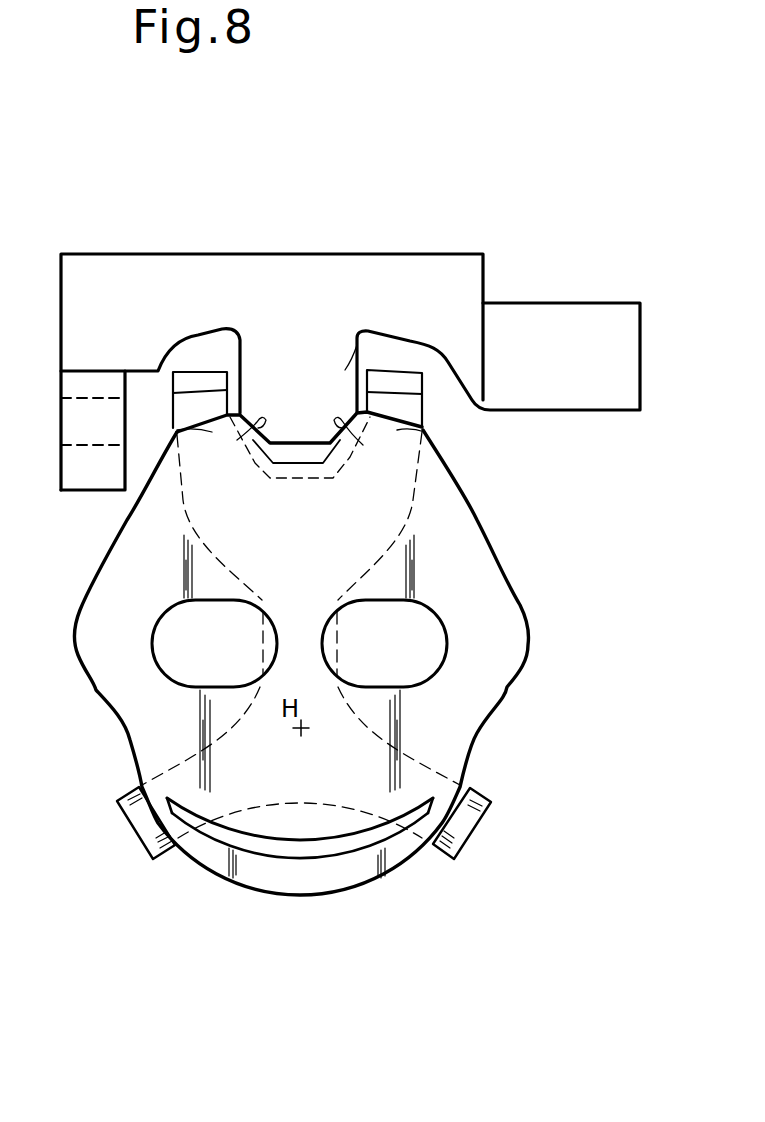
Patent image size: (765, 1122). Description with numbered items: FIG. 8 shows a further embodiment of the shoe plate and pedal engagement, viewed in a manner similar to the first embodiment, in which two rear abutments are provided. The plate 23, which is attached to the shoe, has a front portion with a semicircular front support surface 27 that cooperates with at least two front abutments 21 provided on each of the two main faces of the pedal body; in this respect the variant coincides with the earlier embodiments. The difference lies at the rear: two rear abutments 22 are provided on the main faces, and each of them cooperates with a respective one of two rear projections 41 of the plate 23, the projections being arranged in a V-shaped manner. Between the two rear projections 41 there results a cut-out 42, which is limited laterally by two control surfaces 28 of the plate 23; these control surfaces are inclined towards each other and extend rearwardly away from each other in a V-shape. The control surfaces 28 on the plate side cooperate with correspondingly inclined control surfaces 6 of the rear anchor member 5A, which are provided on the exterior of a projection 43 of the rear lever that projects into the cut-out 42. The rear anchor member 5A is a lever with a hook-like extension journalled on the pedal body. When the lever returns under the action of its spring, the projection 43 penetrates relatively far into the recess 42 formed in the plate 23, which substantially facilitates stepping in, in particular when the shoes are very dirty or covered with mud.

The rear anchor member 5A is at (248, 265).
The rear abutments 22 is at (196, 388).
The projection 43 is at (337, 377).
The rear projections 41 is at (177, 438).
The control surfaces 6 is at (237, 440).
The control surfaces 28 is at (255, 443).
The cut-out 42 is at (292, 458).
The plate 23 is at (102, 680).
The front abutments 21 is at (147, 842).
The front support surface 27 is at (247, 888).